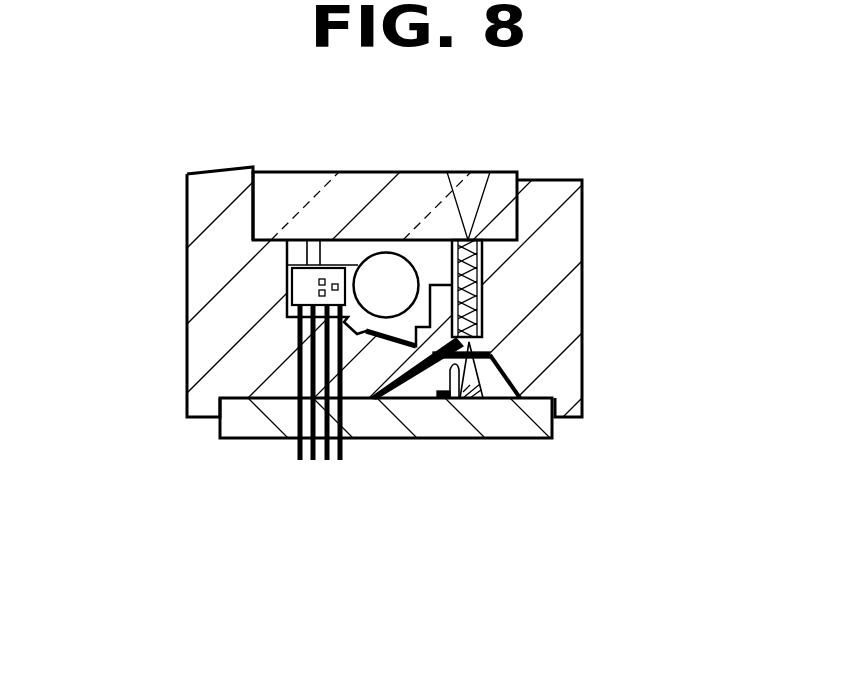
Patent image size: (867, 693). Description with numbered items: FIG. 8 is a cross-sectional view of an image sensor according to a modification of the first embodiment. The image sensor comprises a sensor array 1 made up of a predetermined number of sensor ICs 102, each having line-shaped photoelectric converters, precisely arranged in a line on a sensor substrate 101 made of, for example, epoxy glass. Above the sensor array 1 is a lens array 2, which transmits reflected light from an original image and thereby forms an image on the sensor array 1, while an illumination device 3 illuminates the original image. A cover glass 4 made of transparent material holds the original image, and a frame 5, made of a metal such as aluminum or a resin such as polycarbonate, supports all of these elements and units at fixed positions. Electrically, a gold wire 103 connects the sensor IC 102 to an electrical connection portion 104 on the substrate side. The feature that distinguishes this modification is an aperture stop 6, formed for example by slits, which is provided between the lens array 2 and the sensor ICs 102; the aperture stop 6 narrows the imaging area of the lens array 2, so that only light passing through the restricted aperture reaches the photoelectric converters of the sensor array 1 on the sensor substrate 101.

The sensor array 1 is at (373, 440).
The lens array 2 is at (468, 274).
The illumination device 3 is at (386, 268).
The upper mold block 4 is at (312, 193).
The frame 5 is at (200, 298).
The aperture stop 6 is at (487, 352).
The sensor substrate 101 is at (252, 430).
The sensor IC 102 is at (478, 380).
The gold wire 103 is at (452, 366).
The electrical connection portion 104 is at (446, 398).